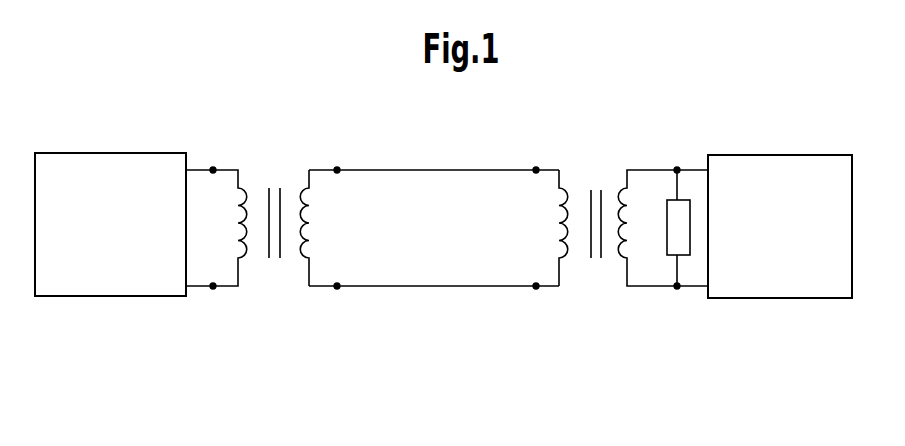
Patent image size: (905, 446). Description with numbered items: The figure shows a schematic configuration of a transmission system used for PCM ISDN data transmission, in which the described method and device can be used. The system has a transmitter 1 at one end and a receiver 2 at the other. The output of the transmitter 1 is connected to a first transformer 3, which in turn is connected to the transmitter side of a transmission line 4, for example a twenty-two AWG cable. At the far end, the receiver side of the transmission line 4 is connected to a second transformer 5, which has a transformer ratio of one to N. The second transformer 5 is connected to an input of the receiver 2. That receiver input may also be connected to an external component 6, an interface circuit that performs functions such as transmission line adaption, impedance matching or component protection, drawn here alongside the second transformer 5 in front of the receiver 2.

The transmitter 1 is at (98, 296).
The receiver 2 is at (768, 298).
The first transformer 3 is at (283, 303).
The transmission line 4 is at (427, 303).
The second transformer 5 is at (592, 303).
The external component 6 is at (667, 241).